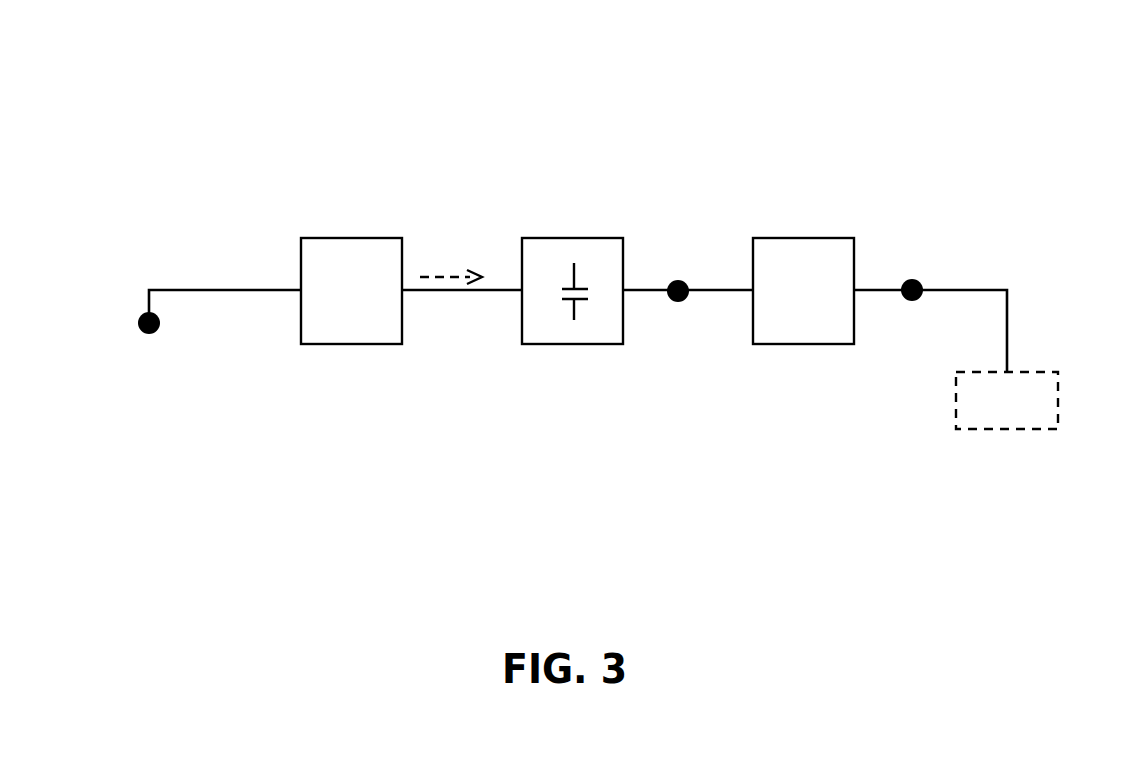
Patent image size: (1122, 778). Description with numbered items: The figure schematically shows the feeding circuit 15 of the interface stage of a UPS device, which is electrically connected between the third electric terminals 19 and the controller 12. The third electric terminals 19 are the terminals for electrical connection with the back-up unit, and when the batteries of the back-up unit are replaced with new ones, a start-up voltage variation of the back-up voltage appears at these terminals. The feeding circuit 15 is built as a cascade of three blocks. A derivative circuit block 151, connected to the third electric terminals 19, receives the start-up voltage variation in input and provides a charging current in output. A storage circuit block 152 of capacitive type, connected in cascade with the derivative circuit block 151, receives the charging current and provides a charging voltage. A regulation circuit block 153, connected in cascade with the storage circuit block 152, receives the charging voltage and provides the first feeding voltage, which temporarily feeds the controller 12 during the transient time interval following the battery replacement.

The feeding circuit 15 is at (583, 110).
The third electric terminals 19 is at (145, 330).
The derivative circuit block 151 is at (350, 244).
The storage circuit block 152 is at (573, 248).
The regulation circuit block 153 is at (793, 249).
The controller 12 is at (1011, 431).